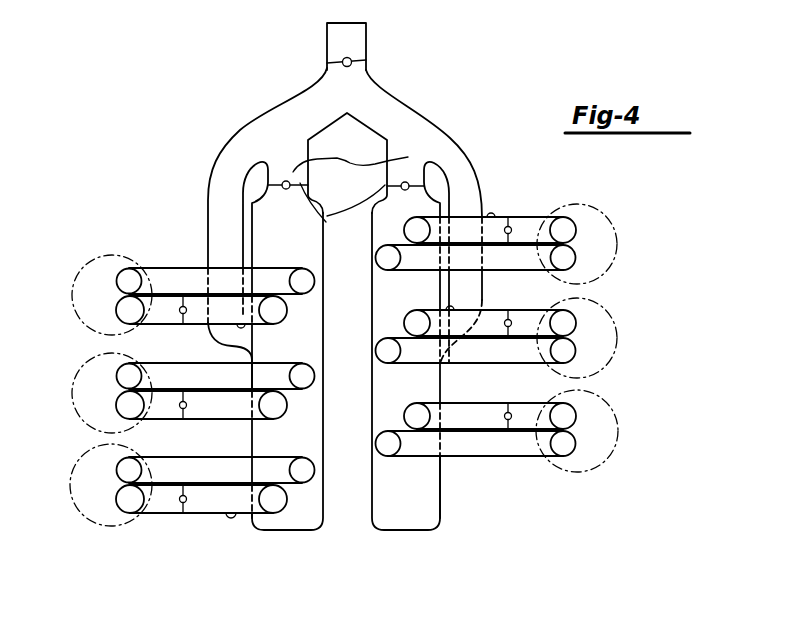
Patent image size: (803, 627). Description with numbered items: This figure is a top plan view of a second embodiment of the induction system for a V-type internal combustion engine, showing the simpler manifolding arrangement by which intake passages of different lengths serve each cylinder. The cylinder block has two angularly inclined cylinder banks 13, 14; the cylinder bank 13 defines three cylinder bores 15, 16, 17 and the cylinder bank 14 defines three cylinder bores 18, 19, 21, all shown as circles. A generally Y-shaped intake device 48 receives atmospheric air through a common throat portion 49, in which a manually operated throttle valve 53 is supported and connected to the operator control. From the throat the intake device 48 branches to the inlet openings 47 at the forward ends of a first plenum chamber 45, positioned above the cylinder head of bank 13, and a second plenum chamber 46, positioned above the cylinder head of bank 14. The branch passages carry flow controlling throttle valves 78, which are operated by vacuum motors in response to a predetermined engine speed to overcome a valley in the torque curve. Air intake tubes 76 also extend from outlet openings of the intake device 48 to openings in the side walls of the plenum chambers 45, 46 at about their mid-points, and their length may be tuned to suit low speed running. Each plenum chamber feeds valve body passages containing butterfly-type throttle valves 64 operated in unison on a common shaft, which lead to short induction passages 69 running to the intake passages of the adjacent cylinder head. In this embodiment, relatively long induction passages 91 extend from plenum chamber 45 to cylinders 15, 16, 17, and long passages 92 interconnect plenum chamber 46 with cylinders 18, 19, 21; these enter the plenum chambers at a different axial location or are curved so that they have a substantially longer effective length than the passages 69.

The cylinder bank 13 is at (113, 530).
The cylinder bank 14 is at (612, 455).
The cylinder bore 15 is at (77, 507).
The cylinder bore 16 is at (77, 405).
The cylinder bore 17 is at (90, 255).
The cylinder bore 18 is at (615, 417).
The cylinder bore 19 is at (615, 329).
The cylinder bore 21 is at (617, 228).
The first plenum chamber 45 is at (307, 512).
The second plenum chamber 46 is at (422, 500).
The inlet opening 47 is at (350, 163).
The intake device 48 is at (413, 108).
The common throat portion 49 is at (327, 42).
The throttle valve 53 is at (352, 58).
The throttle valve 64 is at (510, 218).
The induction passage 69 is at (492, 214).
The air intake tube 76 is at (215, 192).
The throttle valve 78 is at (342, 199).
The long induction passage 91 is at (176, 270).
The long induction passage 92 is at (505, 263).